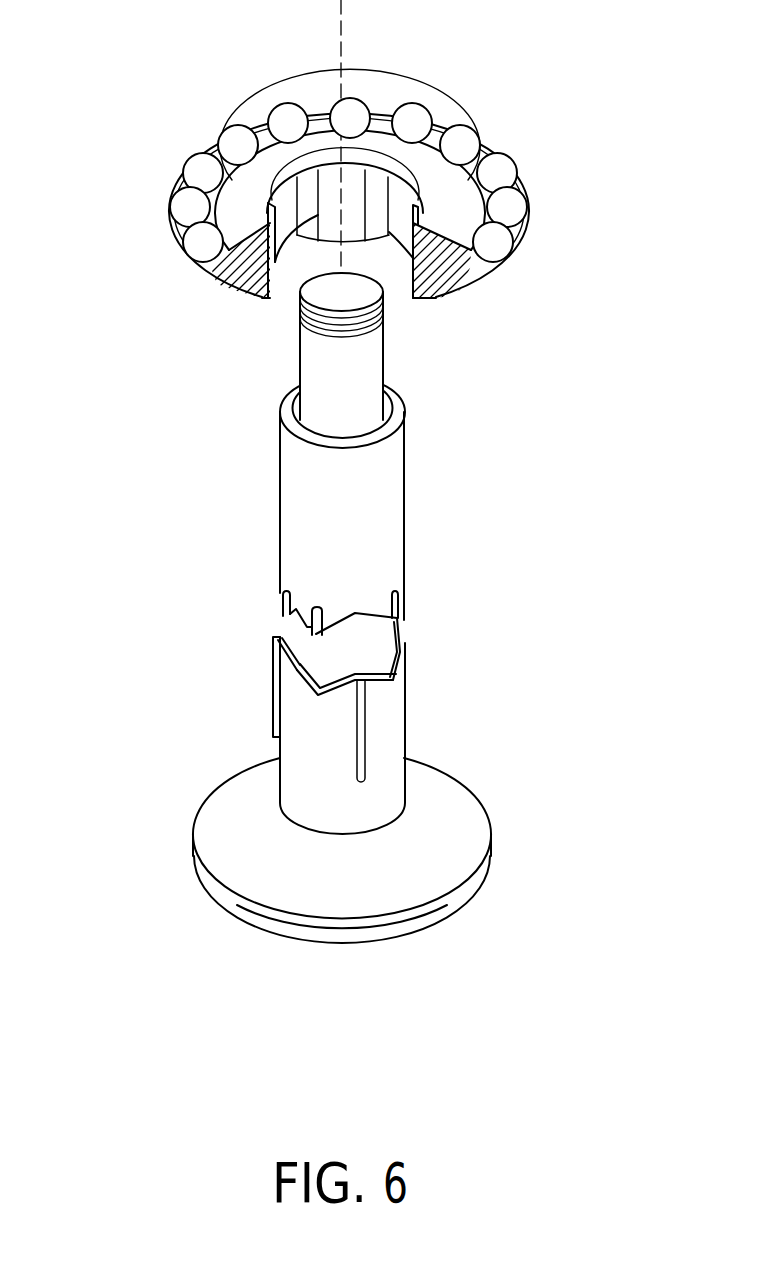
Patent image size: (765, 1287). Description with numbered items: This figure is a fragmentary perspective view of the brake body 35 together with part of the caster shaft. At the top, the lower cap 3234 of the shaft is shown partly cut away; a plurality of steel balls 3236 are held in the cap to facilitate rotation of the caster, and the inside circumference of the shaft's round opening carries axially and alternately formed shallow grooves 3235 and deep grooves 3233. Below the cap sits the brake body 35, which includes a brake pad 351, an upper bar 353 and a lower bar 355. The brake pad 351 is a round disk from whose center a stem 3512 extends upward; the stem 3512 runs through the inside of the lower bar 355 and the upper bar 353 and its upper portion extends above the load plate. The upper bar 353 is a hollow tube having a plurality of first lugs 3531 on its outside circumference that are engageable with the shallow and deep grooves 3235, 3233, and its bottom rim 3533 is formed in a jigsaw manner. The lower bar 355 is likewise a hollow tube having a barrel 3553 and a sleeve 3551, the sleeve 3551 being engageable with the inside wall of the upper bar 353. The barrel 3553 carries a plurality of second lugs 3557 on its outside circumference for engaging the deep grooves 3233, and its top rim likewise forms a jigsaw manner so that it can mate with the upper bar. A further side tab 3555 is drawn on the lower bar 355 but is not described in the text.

The brake body 35 is at (140, 481).
The brake pad 351 is at (482, 840).
The stem 3512 is at (375, 342).
The upper bar 353 is at (295, 470).
The first lugs 3531 is at (322, 630).
The bottom rim 3533 is at (298, 628).
The lower bar 355 is at (553, 623).
The sleeve 3551 is at (377, 639).
The barrel 3553 is at (397, 743).
The side tab 3555 is at (273, 663).
The second lugs 3557 is at (297, 675).
The deep grooves 3233 is at (377, 175).
The lower cap 3234 is at (467, 288).
The shallow grooves 3235 is at (305, 178).
The steel balls 3236 is at (503, 167).